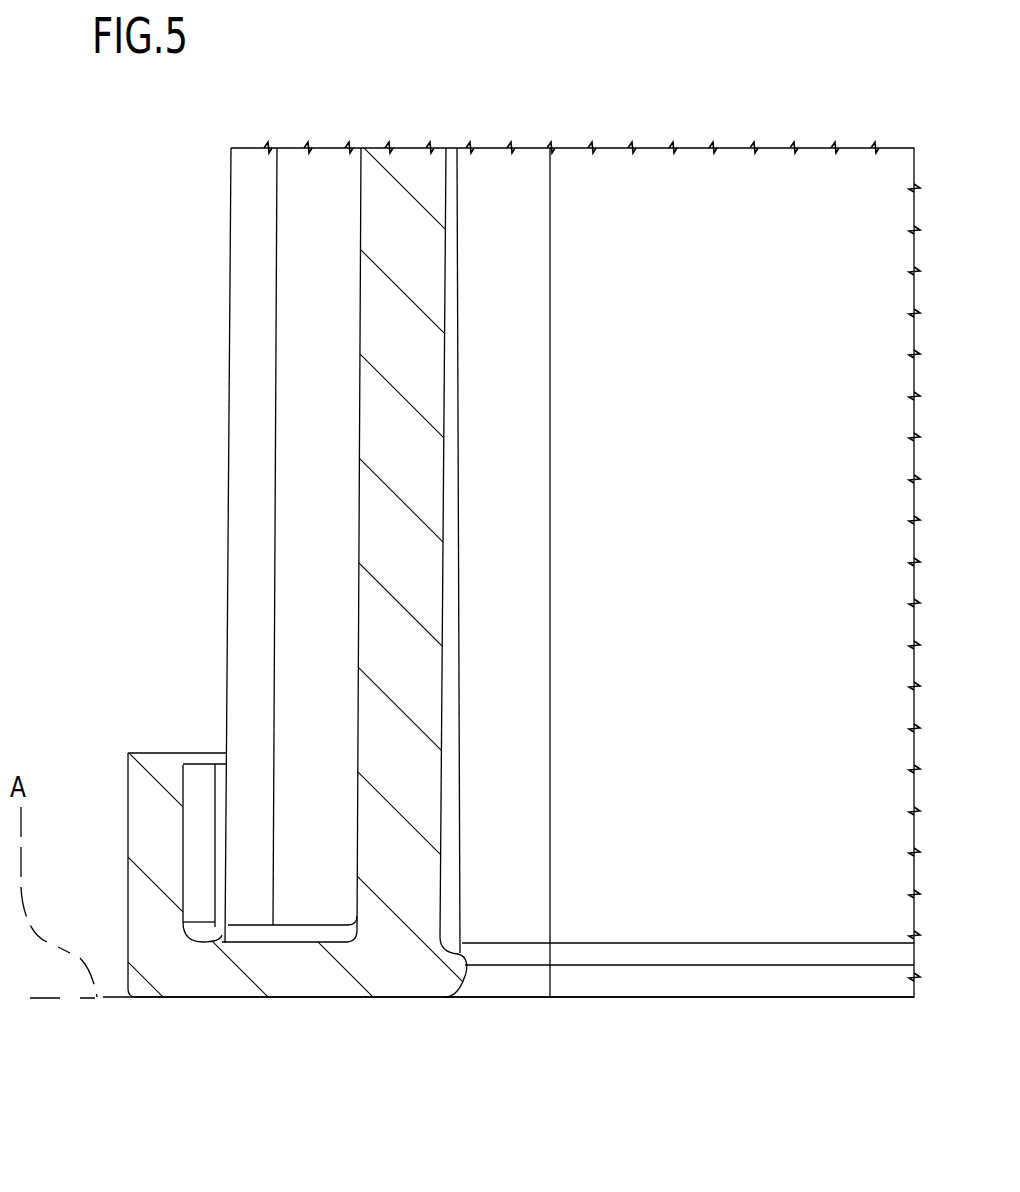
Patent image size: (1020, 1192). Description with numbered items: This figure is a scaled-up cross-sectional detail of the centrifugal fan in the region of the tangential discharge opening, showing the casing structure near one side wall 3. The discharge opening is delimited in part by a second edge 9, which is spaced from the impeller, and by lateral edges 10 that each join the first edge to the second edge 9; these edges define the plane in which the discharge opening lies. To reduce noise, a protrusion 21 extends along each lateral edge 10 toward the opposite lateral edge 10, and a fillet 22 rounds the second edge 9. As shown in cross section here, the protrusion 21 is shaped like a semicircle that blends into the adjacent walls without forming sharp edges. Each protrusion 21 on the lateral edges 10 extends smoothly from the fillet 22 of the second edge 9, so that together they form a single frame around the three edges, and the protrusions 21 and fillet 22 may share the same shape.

The side wall 3 is at (357, 424).
The second edge 9 is at (617, 998).
The lateral edge 10 is at (443, 998).
The protrusion 21 is at (453, 956).
The fillet 22 is at (758, 980).